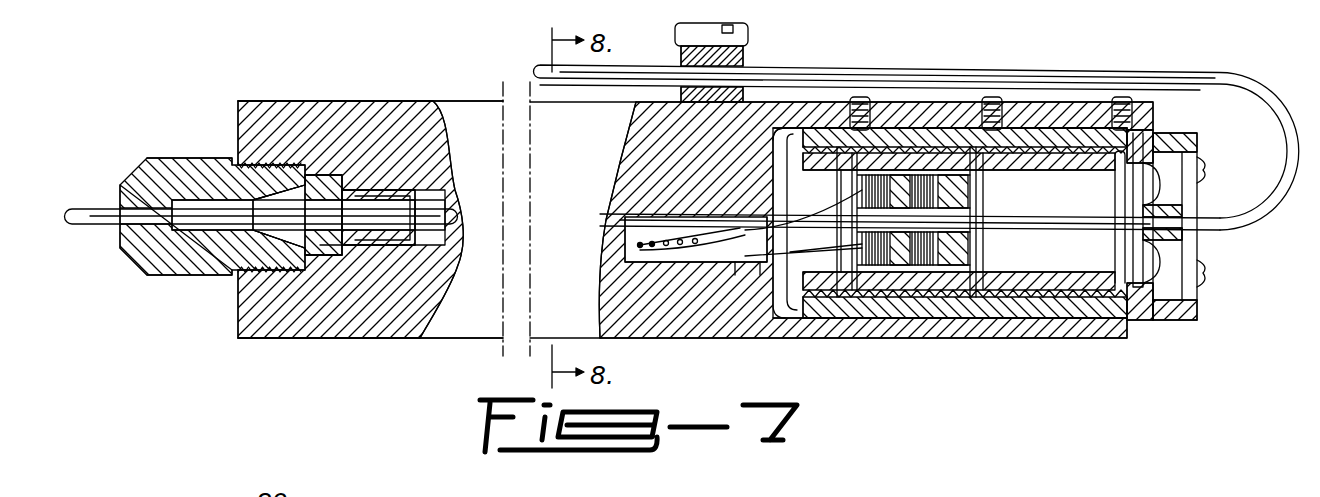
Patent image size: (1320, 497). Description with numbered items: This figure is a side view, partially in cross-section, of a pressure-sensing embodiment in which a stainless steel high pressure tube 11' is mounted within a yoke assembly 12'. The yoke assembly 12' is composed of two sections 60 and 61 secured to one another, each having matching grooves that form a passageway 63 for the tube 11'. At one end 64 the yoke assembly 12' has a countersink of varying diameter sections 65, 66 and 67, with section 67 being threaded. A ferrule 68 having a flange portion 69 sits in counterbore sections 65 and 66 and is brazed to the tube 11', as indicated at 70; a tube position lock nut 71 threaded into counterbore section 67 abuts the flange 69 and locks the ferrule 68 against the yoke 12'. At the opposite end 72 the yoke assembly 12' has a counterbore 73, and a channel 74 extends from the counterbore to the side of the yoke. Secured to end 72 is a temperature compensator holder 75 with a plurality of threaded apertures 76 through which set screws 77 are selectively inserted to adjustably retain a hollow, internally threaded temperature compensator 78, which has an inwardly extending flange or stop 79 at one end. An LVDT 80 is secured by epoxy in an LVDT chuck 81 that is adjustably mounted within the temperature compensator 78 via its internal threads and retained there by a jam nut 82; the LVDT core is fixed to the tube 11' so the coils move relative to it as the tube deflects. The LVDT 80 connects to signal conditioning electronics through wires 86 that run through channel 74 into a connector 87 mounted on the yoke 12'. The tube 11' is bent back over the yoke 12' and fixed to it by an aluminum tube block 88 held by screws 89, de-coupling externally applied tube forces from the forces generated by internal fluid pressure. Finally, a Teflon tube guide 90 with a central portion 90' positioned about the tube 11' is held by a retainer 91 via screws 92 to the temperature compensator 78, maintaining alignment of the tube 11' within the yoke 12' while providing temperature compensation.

The high pressure tube 11' is at (639, 196).
The yoke assembly 12' is at (323, 363).
The yoke section 60 is at (453, 96).
The yoke section 61 is at (444, 344).
The passageway 63 is at (624, 208).
The yoke end 64 is at (238, 118).
The counterbore section 65 is at (368, 194).
The counterbore section 66 is at (326, 177).
The threaded counterbore section 67 is at (266, 162).
The ferrule 68 is at (362, 236).
The flange portion 69 is at (318, 258).
The braze 70 is at (345, 252).
The tube position lock nut 71 is at (168, 165).
The yoke end 72 is at (833, 320).
The counterbore 73 is at (770, 142).
The channel 74 is at (752, 262).
The temperature compensator holder 75 is at (962, 325).
The threaded apertures 76 is at (963, 115).
The set screws 77 is at (1108, 120).
The temperature compensator 78 is at (1032, 318).
The flange or stop 79 is at (1134, 296).
The LVDT 80 is at (968, 198).
The LVDT chuck 81 is at (898, 300).
The jam nut 82 is at (792, 294).
The wires 86 is at (722, 240).
The connector 87 is at (625, 250).
The tube block 88 is at (688, 84).
The screws 89 is at (748, 36).
The tube guide 90 is at (1180, 208).
The central portion 90' is at (1204, 255).
The retainer 91 is at (1186, 322).
The screws 92 is at (1205, 280).